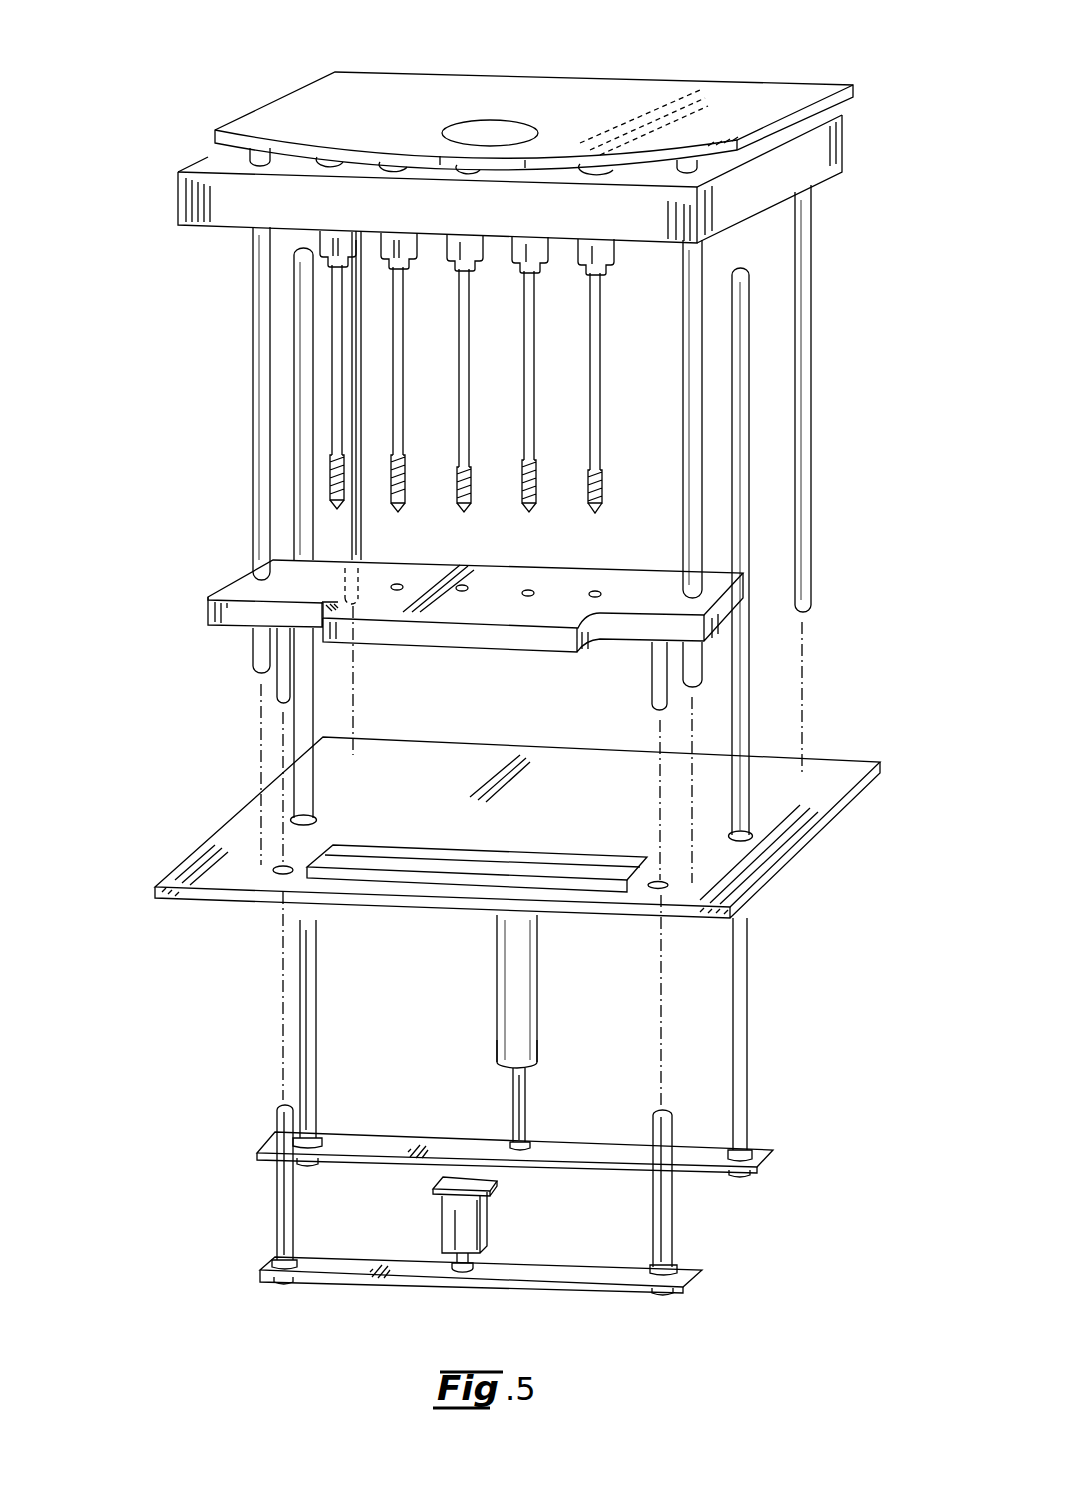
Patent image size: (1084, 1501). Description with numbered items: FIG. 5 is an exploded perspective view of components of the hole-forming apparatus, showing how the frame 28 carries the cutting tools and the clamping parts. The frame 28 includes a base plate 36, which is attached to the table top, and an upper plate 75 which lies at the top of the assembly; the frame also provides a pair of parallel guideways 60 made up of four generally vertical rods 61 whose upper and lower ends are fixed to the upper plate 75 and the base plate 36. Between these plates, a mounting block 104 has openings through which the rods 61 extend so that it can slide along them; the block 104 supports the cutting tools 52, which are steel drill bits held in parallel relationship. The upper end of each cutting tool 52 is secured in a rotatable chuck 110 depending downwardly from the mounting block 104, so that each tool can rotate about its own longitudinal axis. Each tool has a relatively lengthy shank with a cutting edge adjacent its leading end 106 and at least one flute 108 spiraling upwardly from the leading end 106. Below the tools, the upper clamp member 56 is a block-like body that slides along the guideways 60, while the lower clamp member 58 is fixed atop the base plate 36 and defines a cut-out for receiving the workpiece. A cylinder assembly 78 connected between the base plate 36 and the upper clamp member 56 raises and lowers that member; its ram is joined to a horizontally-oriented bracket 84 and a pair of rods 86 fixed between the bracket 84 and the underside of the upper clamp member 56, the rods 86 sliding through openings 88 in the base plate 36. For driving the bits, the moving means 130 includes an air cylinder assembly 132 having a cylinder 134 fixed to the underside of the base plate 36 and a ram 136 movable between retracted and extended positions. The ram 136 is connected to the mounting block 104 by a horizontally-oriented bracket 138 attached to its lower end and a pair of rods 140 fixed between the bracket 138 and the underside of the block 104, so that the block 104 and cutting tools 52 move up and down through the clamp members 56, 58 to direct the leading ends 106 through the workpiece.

The frame 28 is at (828, 447).
The base plate 36 is at (818, 765).
The cutting tools 52 is at (398, 392).
The upper clamp member 56 is at (206, 610).
The lower clamp member 58 is at (497, 853).
The guideways 60 is at (257, 438).
The rods 61 is at (257, 487).
The upper plate 75 is at (800, 90).
The cylinder assembly 78 is at (490, 1212).
The bracket 84 is at (352, 1272).
The rods 86 is at (280, 683).
The openings 88 is at (272, 872).
The mounting block 104 is at (818, 148).
The leading end 106 is at (465, 513).
The flute 108 is at (593, 473).
The rotatable chuck 110 is at (397, 261).
The moving means 130 is at (763, 996).
The air cylinder assembly 132 is at (534, 985).
The cylinder 134 is at (531, 1047).
The ram 136 is at (524, 1100).
The bracket 138 is at (394, 1143).
The rods 140 is at (298, 382).